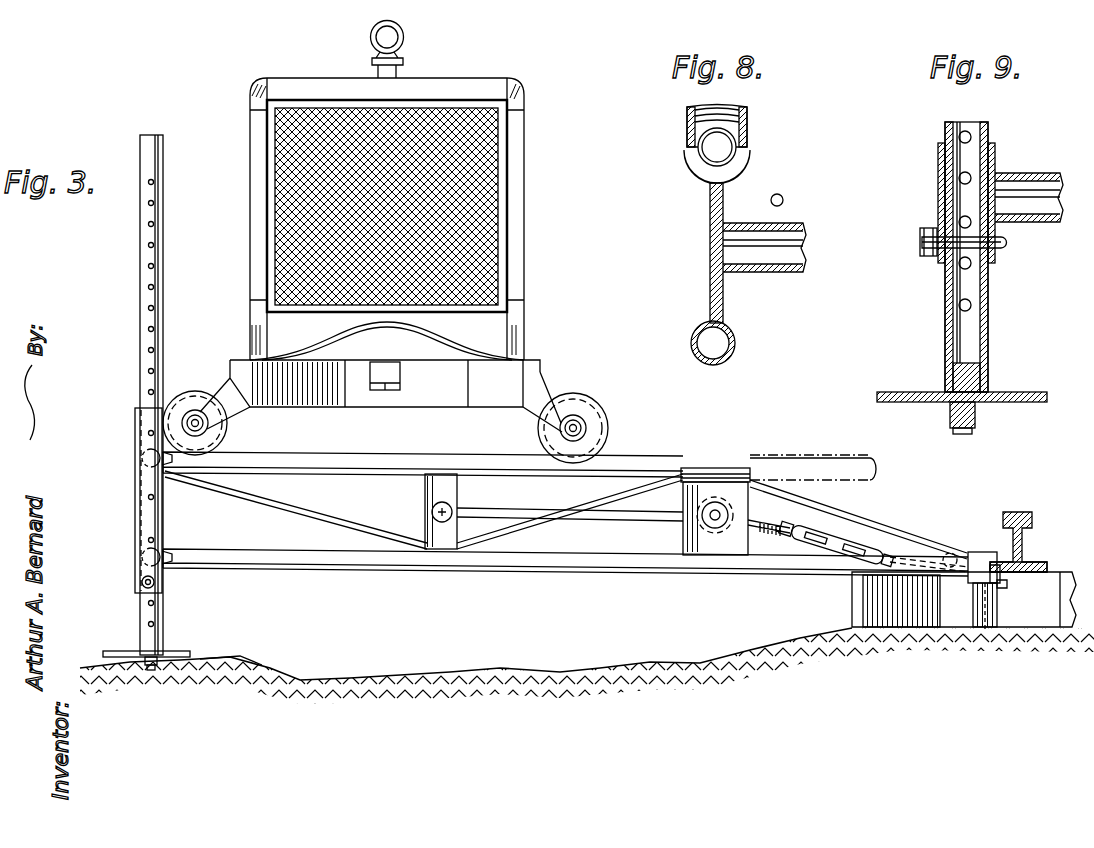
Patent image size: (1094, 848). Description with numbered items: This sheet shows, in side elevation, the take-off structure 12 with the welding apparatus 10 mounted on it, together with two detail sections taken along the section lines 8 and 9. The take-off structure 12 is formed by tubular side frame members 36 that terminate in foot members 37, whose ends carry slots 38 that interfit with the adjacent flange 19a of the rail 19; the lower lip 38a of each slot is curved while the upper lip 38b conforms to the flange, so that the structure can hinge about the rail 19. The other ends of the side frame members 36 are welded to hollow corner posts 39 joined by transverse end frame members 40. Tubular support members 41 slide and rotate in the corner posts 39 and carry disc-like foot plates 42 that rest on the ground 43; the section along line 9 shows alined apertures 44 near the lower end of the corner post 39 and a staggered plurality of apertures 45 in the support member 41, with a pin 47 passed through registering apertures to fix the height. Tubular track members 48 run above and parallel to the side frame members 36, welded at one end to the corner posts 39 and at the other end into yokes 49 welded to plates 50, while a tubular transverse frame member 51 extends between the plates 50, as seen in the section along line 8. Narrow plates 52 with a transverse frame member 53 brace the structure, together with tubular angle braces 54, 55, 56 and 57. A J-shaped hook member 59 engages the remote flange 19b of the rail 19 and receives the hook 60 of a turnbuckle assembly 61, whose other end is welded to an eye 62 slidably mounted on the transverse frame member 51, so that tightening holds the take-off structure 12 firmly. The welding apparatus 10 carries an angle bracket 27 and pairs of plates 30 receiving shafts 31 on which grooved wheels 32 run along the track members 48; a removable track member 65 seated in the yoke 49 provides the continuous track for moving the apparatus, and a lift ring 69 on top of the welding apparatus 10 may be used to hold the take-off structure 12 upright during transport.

In FIG. 3, the section line 8— 8 is at (716, 468).
In FIG. 3, the section line 9— 9 is at (122, 520).
In FIG. 3, the welding apparatus 10 is at (548, 184).
In FIG. 3, the take-off structure 12 is at (383, 588).
In FIG. 3, the rail 19 is at (1030, 532).
In FIG. 3, the adjacent flange 19a is at (1003, 587).
In FIG. 3, the remote flange 19b is at (1035, 562).
In FIG. 3, the angle bracket 27 is at (402, 386).
In FIG. 3, the plate 30 is at (240, 398).
In FIG. 3, the shaft 31 is at (193, 410).
In FIG. 3, the wheel 32 is at (229, 433).
In FIG. 8, the wheel 32 is at (748, 108).
In FIG. 3, the side frame member 36 is at (530, 576).
In FIG. 8, the side frame member 36 is at (700, 328).
In FIG. 3, the foot member 37 is at (975, 552).
In FIG. 3, the slot 38 is at (985, 586).
In FIG. 3, the lower lip 38a is at (988, 592).
In FIG. 3, the upper lip 38b is at (994, 553).
In FIG. 3, the corner post 39 is at (137, 490).
In FIG. 9, the corner post 39 is at (940, 153).
In FIG. 3, the transverse end frame member 40 is at (140, 455).
In FIG. 9, the transverse end frame member 40 is at (1048, 222).
In FIG. 3, the adjustable support member 41 is at (142, 358).
In FIG. 9, the adjustable support member 41 is at (968, 130).
In FIG. 3, the foot plate 42 is at (167, 651).
In FIG. 9, the foot plate 42 is at (1010, 392).
In FIG. 3, the ground 43 is at (228, 657).
In FIG. 9, the alined apertures 44 is at (940, 230).
In FIG. 3, the alined apertures 45 is at (148, 287).
In FIG. 9, the alined apertures 45 is at (972, 137).
In FIG. 3, the pin 47 is at (156, 583).
In FIG. 9, the pin 47 is at (920, 260).
In FIG. 3, the tubular track member 48 is at (389, 452).
In FIG. 8, the tubular track member 48 is at (690, 128).
In FIG. 3, the yoke 49 is at (732, 468).
In FIG. 8, the yoke 49 is at (752, 160).
In FIG. 3, the plate 50 is at (686, 537).
In FIG. 8, the plate 50 is at (710, 205).
In FIG. 3, the tubular transverse frame member 51 is at (725, 540).
In FIG. 8, the tubular transverse frame member 51 is at (790, 272).
In FIG. 3, the narrow plate 52 is at (427, 493).
In FIG. 3, the tubular transverse frame member 53 is at (460, 503).
In FIG. 3, the angle brace 54 is at (333, 518).
In FIG. 3, the angle brace 55 is at (530, 529).
In FIG. 3, the angle brace 56 is at (523, 512).
In FIG. 3, the angle brace 57 is at (897, 525).
In FIG. 3, the J-shaped hook member 59 is at (1047, 572).
In FIG. 3, the hook 60 is at (950, 553).
In FIG. 3, the turnbuckle assembly 61 is at (853, 537).
In FIG. 3, the eye 62 is at (765, 522).
In FIG. 3, the removable track member 65 is at (842, 470).
In FIG. 3, the lift ring 69 is at (405, 40).